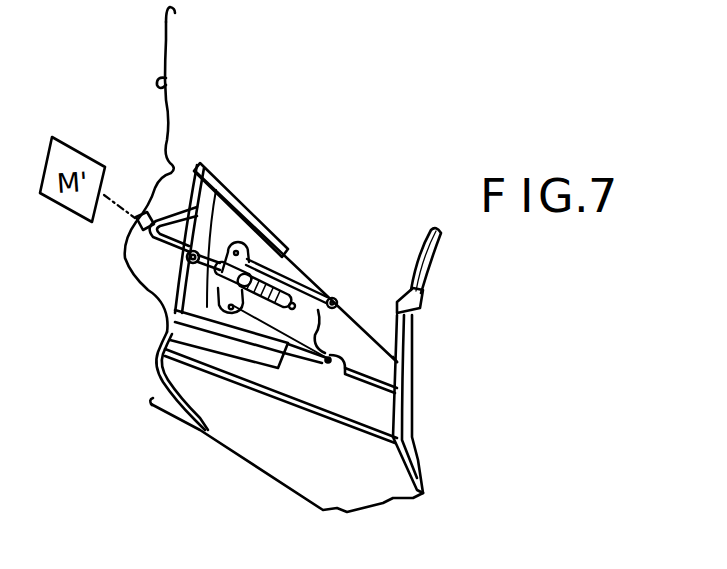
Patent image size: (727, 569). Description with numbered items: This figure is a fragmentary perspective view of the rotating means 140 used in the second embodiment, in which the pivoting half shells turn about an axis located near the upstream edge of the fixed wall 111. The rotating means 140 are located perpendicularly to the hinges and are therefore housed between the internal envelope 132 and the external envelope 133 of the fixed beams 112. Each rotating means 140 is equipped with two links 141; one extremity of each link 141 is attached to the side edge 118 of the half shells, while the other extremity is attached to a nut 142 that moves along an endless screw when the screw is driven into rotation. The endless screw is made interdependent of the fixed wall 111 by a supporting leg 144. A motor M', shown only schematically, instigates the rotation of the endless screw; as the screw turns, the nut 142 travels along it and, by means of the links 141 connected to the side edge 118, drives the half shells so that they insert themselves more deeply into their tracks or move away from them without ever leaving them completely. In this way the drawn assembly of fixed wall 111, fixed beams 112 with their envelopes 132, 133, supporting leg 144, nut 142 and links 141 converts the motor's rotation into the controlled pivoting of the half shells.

The fixed wall 111 is at (150, 347).
The fixed beams 112 is at (410, 378).
The side edge 118 is at (431, 258).
The internal envelope 132 is at (163, 157).
The external envelope 133 is at (166, 83).
The rotating means 140 is at (344, 252).
The links 141 is at (329, 359).
The nut 142 is at (238, 250).
The supporting leg 144 is at (208, 212).